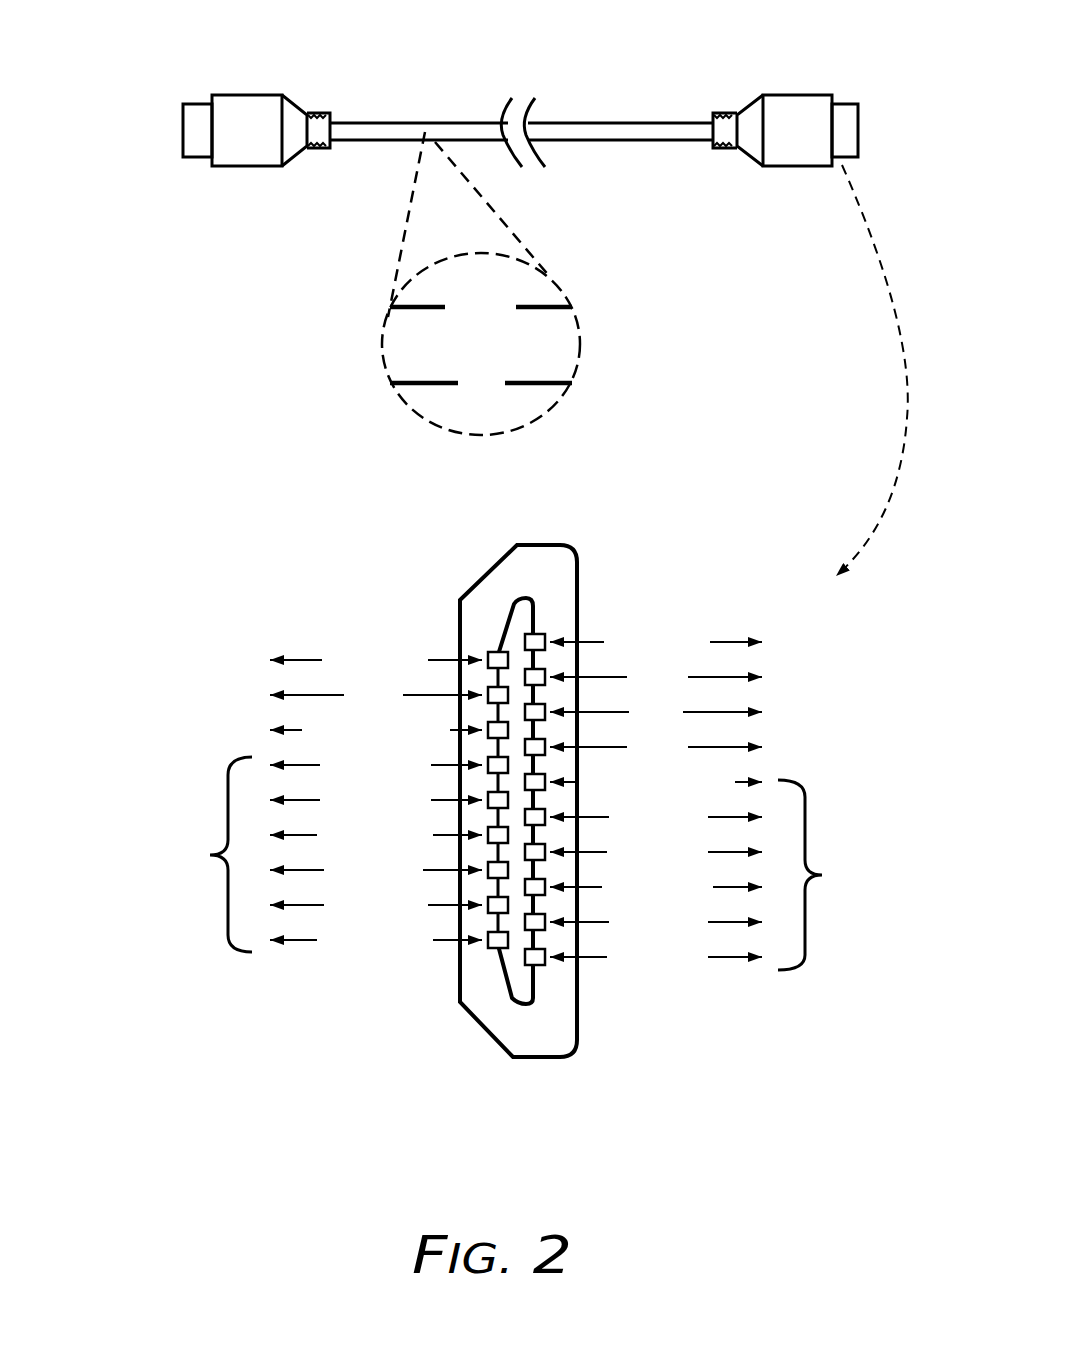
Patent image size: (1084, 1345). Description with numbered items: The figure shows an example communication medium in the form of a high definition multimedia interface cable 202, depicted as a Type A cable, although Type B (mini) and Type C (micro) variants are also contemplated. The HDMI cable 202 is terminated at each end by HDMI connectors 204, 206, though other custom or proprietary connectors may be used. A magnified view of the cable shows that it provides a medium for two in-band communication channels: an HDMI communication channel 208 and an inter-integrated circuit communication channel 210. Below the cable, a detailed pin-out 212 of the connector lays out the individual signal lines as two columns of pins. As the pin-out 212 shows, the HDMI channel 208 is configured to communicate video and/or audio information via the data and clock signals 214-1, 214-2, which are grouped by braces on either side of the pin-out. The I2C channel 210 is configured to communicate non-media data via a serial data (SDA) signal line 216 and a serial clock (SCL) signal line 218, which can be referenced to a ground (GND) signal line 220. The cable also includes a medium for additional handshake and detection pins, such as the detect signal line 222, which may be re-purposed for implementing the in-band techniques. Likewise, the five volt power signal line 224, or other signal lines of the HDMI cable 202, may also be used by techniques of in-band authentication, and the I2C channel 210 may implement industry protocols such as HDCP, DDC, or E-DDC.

The HDMI cable 202 is at (150, 56).
The HDMI connector 204 is at (195, 159).
The HDMI connector 206 is at (848, 102).
The HDMI communication channel 208 is at (542, 296).
The I2C communication channel 210 is at (542, 393).
The detailed pin-out 212 is at (286, 521).
The data and clock signals 214-1 is at (210, 855).
The data and clock signals 214-2 is at (822, 875).
The serial data (SDA) signal line 216 is at (265, 709).
The serial clock (SCL) signal line 218 is at (773, 729).
The ground (GND) signal line 220 is at (775, 659).
The detect signal line 222 is at (775, 629).
The 5 volt power (5V PWR) signal line 224 is at (265, 648).